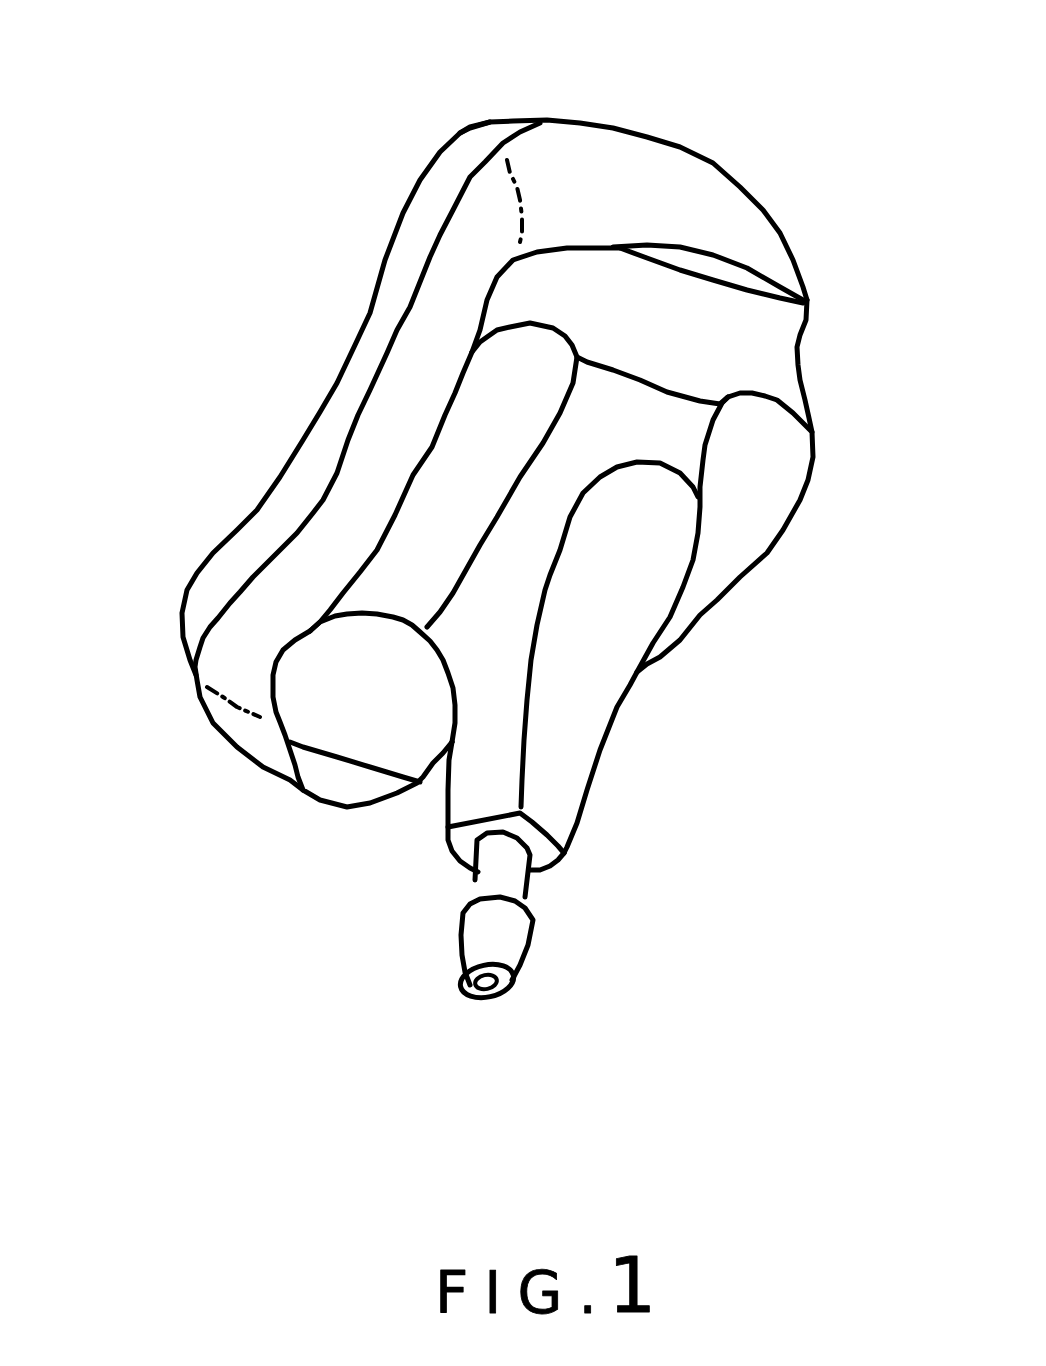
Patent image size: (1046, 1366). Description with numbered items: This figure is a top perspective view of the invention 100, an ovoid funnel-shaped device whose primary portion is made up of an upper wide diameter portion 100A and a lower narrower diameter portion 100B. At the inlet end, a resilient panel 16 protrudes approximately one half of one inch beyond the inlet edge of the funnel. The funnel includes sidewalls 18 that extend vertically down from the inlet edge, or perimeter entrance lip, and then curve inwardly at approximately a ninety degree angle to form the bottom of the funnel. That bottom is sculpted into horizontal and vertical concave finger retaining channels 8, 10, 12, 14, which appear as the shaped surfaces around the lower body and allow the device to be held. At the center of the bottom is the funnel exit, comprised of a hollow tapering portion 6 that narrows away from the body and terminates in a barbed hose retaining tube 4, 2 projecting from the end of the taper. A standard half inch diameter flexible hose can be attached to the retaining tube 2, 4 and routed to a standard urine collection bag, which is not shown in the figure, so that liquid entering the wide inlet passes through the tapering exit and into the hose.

The barbed hose retaining tube 2 is at (513, 952).
The barbed hose retaining tube 4 is at (517, 883).
The hollow tapering portion 6 is at (560, 787).
The finger retaining channel 8 is at (328, 689).
The finger retaining channel 10 is at (773, 363).
The finger retaining channel 12 is at (447, 477).
The finger retaining channel 14 is at (753, 520).
The resilient panel 16 is at (410, 237).
The sidewalls 18 is at (328, 522).
The invention 100 is at (903, 488).
The upper wide diameter portion 100A is at (793, 193).
The lower narrower diameter portion 100B is at (341, 927).